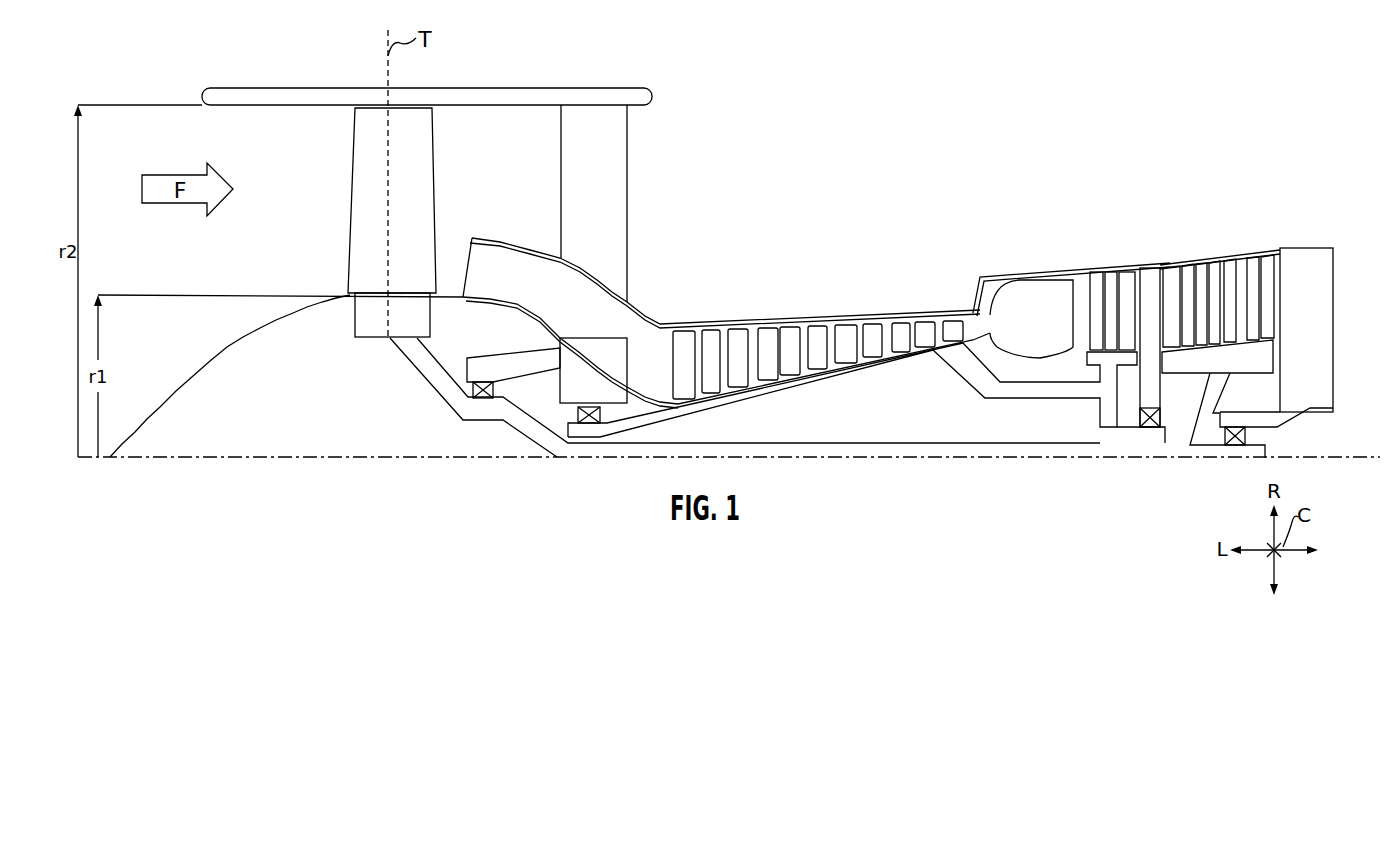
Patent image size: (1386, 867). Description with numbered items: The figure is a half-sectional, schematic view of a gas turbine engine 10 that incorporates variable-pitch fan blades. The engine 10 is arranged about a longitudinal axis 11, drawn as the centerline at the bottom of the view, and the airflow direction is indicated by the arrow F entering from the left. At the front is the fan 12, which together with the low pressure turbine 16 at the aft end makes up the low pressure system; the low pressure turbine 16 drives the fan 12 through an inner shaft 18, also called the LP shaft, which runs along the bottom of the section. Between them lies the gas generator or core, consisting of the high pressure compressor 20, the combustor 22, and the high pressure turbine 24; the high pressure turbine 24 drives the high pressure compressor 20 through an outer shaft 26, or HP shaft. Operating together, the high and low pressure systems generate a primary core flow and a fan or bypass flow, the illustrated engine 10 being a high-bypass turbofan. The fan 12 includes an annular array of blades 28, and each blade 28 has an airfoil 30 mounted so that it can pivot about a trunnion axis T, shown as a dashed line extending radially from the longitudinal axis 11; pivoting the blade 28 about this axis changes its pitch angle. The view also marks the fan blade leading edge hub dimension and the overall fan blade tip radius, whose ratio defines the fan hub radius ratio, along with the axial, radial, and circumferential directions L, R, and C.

The gas turbine engine 10 is at (784, 135).
The longitudinal axis 11 is at (162, 459).
The fan 12 is at (450, 153).
The low pressure turbine 16 is at (1210, 272).
The inner shaft 18 is at (522, 426).
The high pressure compressor 20 is at (793, 335).
The combustor 22 is at (1016, 321).
The high pressure turbine 24 is at (1122, 283).
The outer shaft 26 is at (985, 398).
The blade 28 is at (354, 319).
The airfoil 30 is at (387, 141).